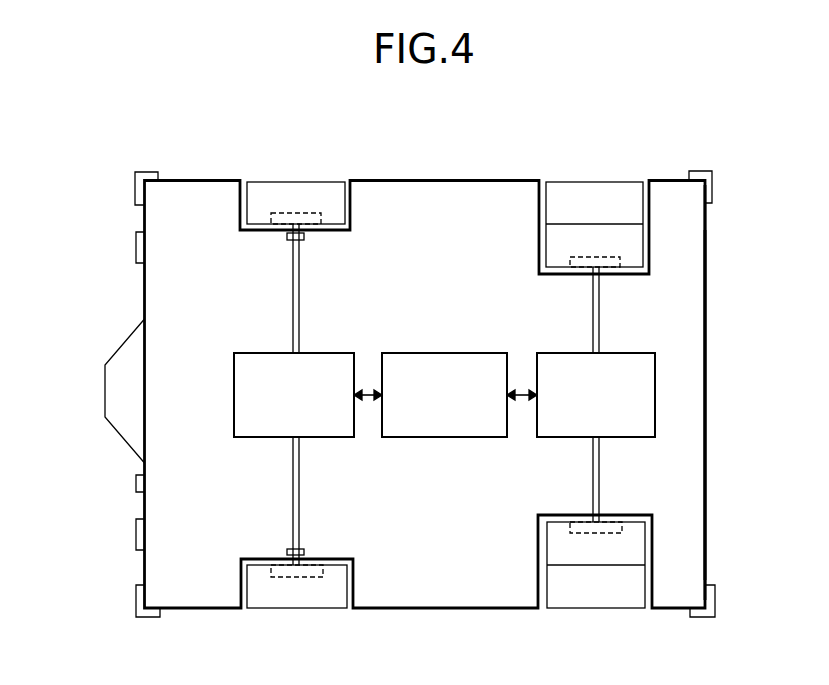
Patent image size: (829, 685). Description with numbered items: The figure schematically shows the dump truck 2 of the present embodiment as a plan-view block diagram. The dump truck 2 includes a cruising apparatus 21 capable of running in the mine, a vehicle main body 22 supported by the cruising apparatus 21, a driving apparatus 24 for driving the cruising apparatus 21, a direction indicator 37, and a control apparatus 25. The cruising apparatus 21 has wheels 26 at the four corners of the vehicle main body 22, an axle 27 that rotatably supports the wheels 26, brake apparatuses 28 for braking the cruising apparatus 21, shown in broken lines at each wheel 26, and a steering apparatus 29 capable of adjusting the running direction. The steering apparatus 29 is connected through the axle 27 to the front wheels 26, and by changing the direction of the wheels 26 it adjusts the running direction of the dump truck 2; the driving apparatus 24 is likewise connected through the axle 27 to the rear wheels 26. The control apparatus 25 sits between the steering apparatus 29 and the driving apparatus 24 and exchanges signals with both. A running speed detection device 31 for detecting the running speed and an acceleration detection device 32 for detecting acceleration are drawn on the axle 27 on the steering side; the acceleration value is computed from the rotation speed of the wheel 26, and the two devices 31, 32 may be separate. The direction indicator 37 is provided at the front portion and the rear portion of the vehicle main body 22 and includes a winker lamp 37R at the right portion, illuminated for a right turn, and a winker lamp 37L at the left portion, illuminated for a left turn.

The dump truck 2 is at (687, 164).
The cruising apparatus 21 is at (240, 180).
The vehicle main body 22 is at (706, 214).
The driving apparatus 24 is at (626, 353).
The control apparatus 25 is at (476, 353).
The wheels 26 is at (255, 180).
The axle 27 is at (293, 479).
The brake apparatuses 28 is at (314, 213).
The steering apparatus 29 is at (325, 353).
The running speed detection device 31 is at (248, 394).
The acceleration detection device 32 is at (287, 237).
The direction indicator 37 is at (421, 394).
The winker lamp 37R is at (135, 186).
The winker lamp 37L is at (136, 592).